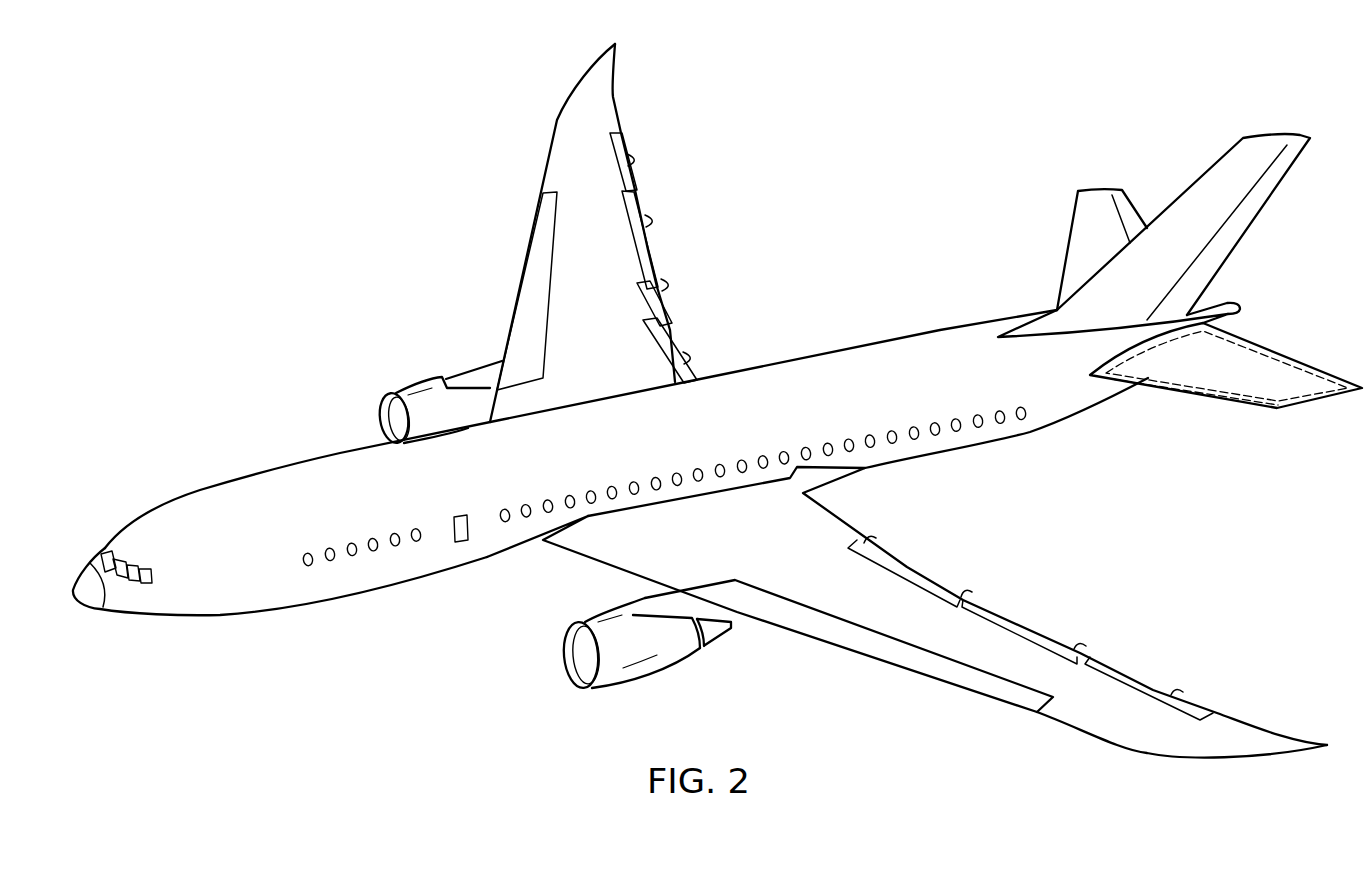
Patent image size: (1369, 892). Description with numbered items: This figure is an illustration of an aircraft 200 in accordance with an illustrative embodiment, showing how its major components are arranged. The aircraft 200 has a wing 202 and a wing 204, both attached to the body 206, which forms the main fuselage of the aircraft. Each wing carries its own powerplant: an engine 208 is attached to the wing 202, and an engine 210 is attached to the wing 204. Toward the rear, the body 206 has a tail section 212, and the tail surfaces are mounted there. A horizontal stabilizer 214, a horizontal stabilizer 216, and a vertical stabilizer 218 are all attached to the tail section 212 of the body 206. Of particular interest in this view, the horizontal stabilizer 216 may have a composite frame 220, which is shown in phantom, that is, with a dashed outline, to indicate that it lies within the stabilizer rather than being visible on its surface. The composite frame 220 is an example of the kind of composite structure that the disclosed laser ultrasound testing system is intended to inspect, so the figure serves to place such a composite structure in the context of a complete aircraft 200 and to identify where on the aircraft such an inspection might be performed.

The aircraft 200 is at (333, 252).
The wing 202 is at (618, 108).
The wing 204 is at (1077, 730).
The body 206 is at (318, 457).
The engine 208 is at (420, 377).
The engine 210 is at (652, 681).
The tail section 212 is at (1155, 422).
The horizontal stabilizer 214 is at (1098, 188).
The horizontal stabilizer 216 is at (1243, 402).
The vertical stabilizer 218 is at (1233, 250).
The composite frame 220 is at (1273, 360).